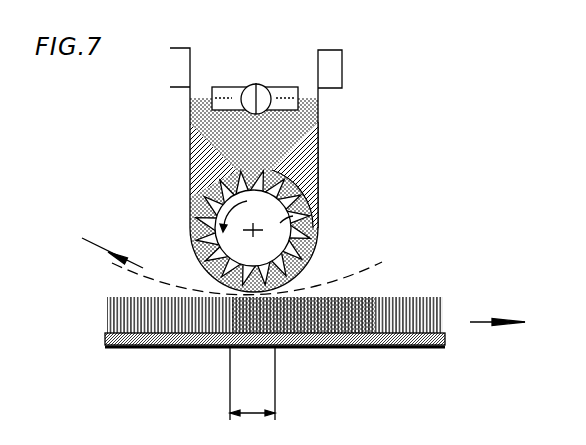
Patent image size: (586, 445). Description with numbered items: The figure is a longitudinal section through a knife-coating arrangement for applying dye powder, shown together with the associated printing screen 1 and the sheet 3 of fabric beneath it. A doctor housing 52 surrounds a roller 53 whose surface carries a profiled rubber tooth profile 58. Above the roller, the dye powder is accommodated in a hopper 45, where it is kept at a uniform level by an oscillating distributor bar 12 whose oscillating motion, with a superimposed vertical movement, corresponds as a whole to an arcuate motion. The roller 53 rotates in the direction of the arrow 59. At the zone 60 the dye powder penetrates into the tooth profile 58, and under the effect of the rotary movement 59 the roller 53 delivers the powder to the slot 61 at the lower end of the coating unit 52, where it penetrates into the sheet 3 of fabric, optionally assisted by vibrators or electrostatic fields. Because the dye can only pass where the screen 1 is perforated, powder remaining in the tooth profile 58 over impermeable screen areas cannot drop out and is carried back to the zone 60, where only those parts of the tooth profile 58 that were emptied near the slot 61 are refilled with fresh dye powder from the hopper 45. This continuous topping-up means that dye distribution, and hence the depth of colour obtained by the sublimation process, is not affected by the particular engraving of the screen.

The screen 1 is at (362, 271).
The sheet of fabric 3 is at (378, 298).
The distributor bar 12 is at (223, 93).
The hopper 45 is at (227, 122).
The doctor housing 52 is at (318, 180).
The roller 53 is at (282, 221).
The rubber tooth profile 58 is at (190, 203).
The direction of rotation 59 is at (251, 229).
The zone 60 is at (272, 170).
The slot 61 is at (249, 411).